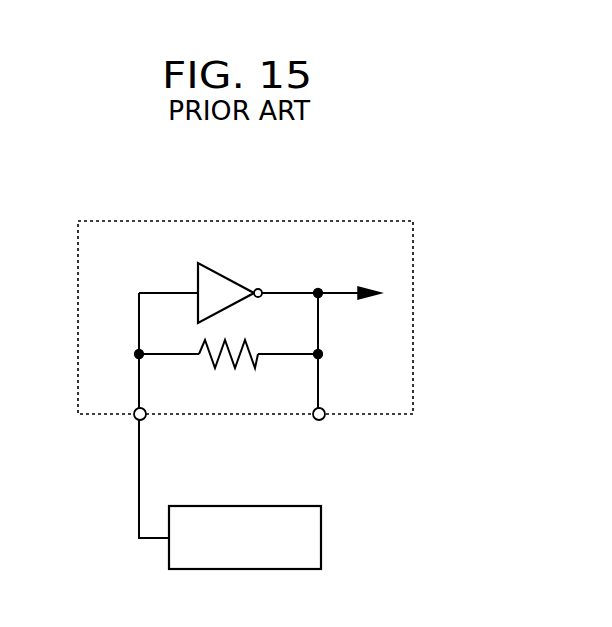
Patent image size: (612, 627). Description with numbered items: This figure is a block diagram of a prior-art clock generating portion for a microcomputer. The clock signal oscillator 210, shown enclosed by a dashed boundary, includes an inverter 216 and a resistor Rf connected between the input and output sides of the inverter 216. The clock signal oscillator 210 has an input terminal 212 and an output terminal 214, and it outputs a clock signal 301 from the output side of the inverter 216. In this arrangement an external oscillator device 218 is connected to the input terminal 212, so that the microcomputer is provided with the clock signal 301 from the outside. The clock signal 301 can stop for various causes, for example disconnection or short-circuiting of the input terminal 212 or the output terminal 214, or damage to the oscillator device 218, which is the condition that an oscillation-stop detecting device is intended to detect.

The clock signal oscillator 210 is at (296, 220).
The inverter 216 is at (235, 282).
The clock signal 301 is at (335, 290).
The input terminal 212 is at (137, 423).
The output terminal 214 is at (319, 421).
The oscillator device 218 is at (321, 538).
The resistor Rf is at (228, 372).